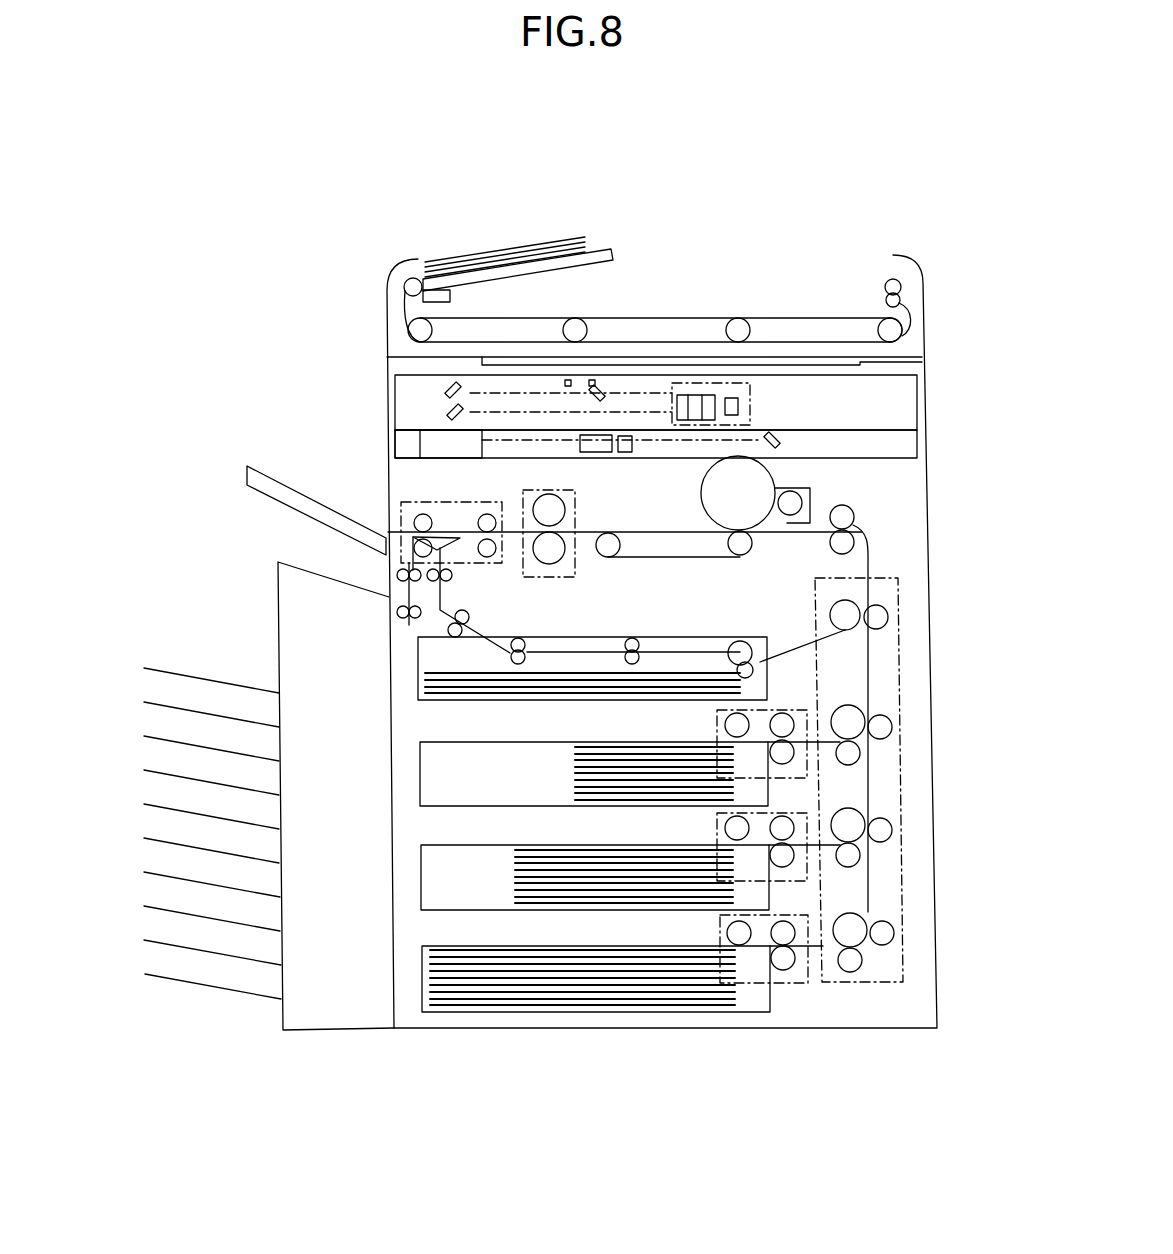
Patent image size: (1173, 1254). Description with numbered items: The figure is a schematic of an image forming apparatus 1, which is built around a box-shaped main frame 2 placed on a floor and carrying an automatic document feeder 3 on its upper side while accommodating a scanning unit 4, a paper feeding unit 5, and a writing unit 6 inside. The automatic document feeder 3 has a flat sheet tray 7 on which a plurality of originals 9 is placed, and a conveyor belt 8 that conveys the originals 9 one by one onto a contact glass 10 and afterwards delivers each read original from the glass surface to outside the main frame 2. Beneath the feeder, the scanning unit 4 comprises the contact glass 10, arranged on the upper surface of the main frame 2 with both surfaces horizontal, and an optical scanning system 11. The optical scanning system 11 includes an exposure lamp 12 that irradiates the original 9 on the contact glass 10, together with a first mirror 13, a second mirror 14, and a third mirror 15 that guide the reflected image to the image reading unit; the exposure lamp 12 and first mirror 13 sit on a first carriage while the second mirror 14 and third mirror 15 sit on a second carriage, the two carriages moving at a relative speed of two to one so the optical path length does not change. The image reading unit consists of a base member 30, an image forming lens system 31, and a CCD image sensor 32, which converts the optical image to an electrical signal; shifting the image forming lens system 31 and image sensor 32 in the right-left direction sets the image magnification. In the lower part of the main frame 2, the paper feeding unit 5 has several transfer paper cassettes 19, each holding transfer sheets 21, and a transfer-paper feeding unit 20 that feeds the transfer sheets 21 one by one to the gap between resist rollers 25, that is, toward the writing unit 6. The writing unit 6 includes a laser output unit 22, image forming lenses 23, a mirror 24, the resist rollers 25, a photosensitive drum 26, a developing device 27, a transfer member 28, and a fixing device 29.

The image forming apparatus 1 is at (338, 220).
The main frame 2 is at (930, 596).
The automatic document feeder 3 is at (923, 314).
The scanning unit 4 is at (907, 408).
The paper feeding unit 5 is at (908, 680).
The writing unit 6 is at (928, 440).
The sheet tray 7 is at (606, 241).
The conveyor belt 8 is at (700, 312).
The originals 9 is at (497, 256).
The contact glass 10 is at (862, 362).
The optical scanning system 11 is at (627, 378).
The exposure lamp 12 is at (570, 378).
The first mirror 13 is at (612, 394).
The second mirror 14 is at (446, 388).
The third mirror 15 is at (446, 410).
The transfer paper cassettes 19 is at (437, 700).
The transfer-paper feeding unit 20 is at (902, 800).
The transfer sheets 21 is at (672, 762).
The laser output unit 22 is at (433, 446).
The image forming lenses 23 is at (597, 455).
The mirror 24 is at (781, 443).
The resist rollers 25 is at (855, 515).
The photosensitive drum 26 is at (768, 527).
The developing device 27 is at (810, 490).
The transfer member 28 is at (742, 557).
The fixing device 29 is at (549, 490).
The base member 30 is at (745, 374).
The image forming lens system 31 is at (716, 395).
The image sensor 32 is at (741, 405).